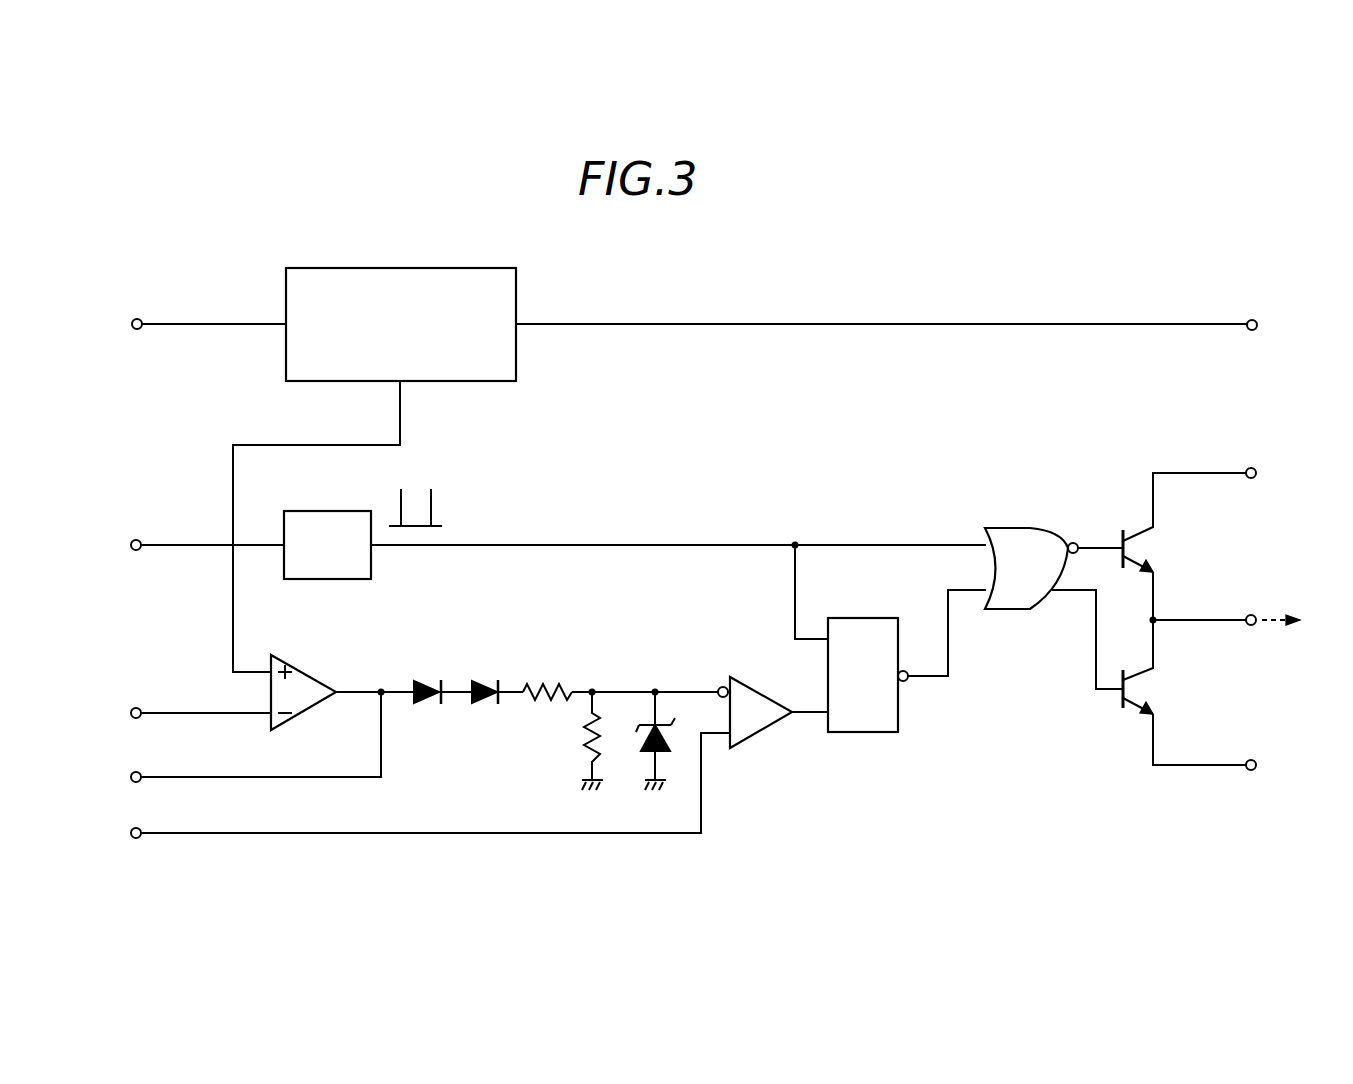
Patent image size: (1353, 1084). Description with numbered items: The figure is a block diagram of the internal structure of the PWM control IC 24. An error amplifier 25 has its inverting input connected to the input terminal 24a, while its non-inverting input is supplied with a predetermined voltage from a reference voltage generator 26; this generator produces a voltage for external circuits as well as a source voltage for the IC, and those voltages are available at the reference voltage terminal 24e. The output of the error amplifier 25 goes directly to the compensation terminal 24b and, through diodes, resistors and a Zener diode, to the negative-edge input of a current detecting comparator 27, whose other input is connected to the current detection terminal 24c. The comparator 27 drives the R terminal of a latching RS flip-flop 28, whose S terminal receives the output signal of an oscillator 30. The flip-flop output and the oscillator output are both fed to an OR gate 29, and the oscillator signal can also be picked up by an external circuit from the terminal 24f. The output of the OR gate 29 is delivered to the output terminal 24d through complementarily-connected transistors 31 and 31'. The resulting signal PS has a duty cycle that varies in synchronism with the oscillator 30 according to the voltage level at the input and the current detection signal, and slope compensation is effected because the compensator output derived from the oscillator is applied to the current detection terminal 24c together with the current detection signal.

The PWM control IC 24 is at (822, 278).
The input terminal 24a is at (131, 710).
The compensation terminal 24b is at (131, 774).
The current detection terminal 24c is at (131, 831).
The output terminal 24d is at (1254, 627).
The reference voltage terminal 24e is at (1252, 319).
The terminal 24f is at (131, 542).
The error amplifier 25 is at (312, 680).
The reference voltage generator 26 is at (428, 268).
The current detecting comparator 27 is at (764, 734).
The latching RS flip-flop 28 is at (875, 732).
The OR gate 29 is at (1012, 609).
The oscillator 30 is at (371, 571).
The transistor 31 is at (1167, 543).
The transistor 31' is at (1157, 695).